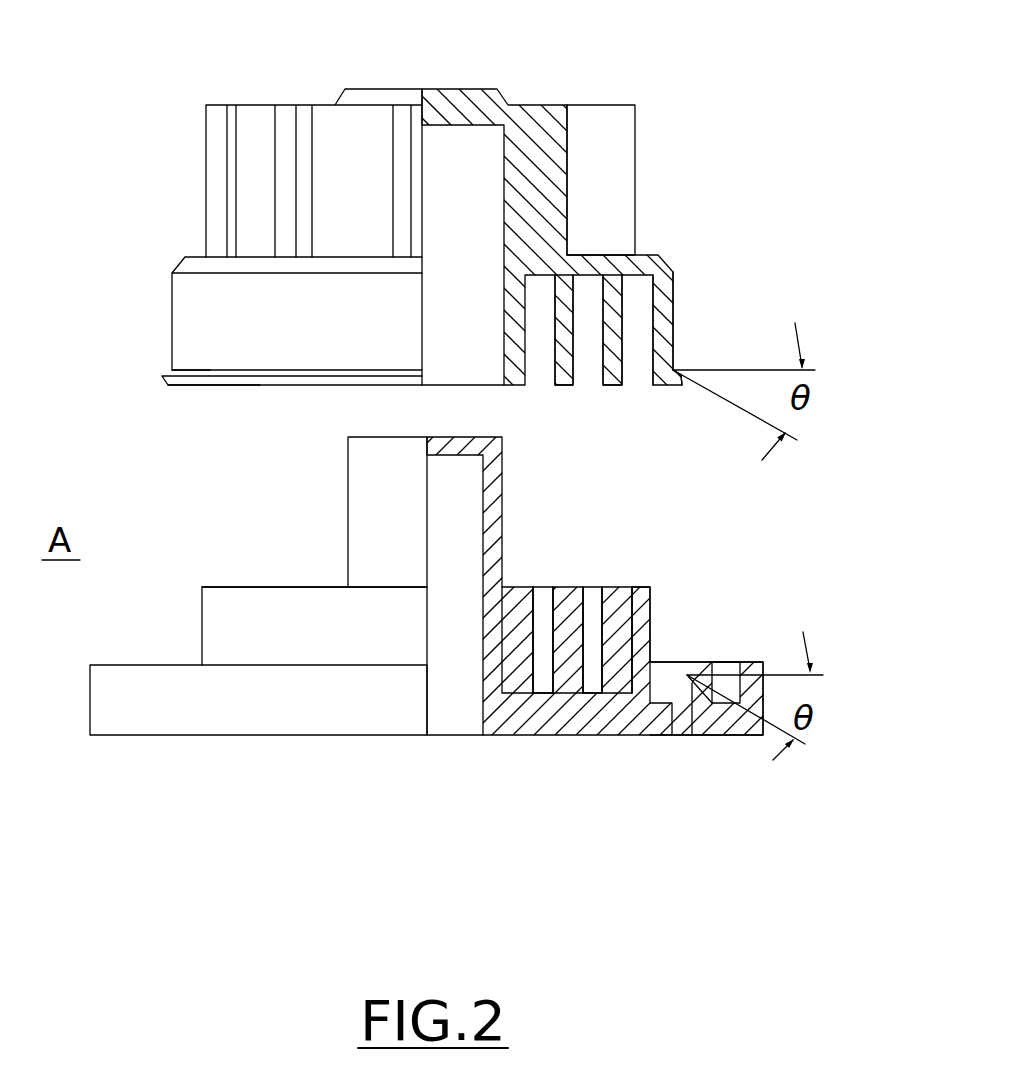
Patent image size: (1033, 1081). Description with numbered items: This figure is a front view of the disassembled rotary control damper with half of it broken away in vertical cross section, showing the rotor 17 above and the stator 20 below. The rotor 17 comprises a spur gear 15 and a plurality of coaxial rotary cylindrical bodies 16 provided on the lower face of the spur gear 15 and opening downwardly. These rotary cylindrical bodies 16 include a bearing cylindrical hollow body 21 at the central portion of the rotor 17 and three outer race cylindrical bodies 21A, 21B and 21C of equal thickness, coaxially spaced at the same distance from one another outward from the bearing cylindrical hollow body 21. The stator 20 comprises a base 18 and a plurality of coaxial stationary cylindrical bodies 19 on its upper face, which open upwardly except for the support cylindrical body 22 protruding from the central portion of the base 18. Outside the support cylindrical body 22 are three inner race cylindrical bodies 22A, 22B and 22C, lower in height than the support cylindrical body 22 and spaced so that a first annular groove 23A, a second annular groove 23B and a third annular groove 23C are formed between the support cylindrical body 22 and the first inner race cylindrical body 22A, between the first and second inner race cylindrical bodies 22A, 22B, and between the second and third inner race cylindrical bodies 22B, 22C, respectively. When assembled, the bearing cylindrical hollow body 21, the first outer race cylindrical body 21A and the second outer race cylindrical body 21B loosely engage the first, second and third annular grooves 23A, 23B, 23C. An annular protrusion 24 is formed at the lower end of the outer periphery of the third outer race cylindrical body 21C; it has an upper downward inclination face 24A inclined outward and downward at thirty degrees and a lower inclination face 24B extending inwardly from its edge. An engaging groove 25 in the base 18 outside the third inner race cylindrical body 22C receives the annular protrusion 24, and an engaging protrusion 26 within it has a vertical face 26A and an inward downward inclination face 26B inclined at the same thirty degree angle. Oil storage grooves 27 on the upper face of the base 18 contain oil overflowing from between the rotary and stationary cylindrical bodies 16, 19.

The spur gear 15 is at (610, 122).
The rotary cylindrical bodies 16 is at (187, 307).
The rotor 17 is at (316, 106).
The base 18 is at (226, 718).
The stationary cylindrical bodies 19 is at (200, 632).
The stator 20 is at (258, 587).
The bearing cylindrical hollow body 21 is at (513, 368).
The first outer race cylindrical body 21A is at (565, 358).
The second outer race cylindrical body 21B is at (618, 355).
The third outer race cylindrical body 21C is at (672, 280).
The support cylindrical body 22 is at (502, 488).
The first inner race cylindrical body 22A is at (538, 592).
The second inner race cylindrical body 22B is at (597, 592).
The third inner race cylindrical body 22C is at (641, 601).
The first annular groove 23A is at (522, 648).
The second annular groove 23B is at (572, 653).
The third annular groove 23C is at (620, 665).
The annular protrusion 24 is at (247, 382).
The upper downward inclination face 24A is at (205, 373).
The lower inclination face 24B is at (190, 387).
The engaging groove 25 is at (665, 683).
The engaging protrusion 26 is at (733, 670).
The vertical face 26A is at (684, 675).
The inward downward inclination face 26B is at (690, 667).
The oil storage grooves 27 is at (745, 662).